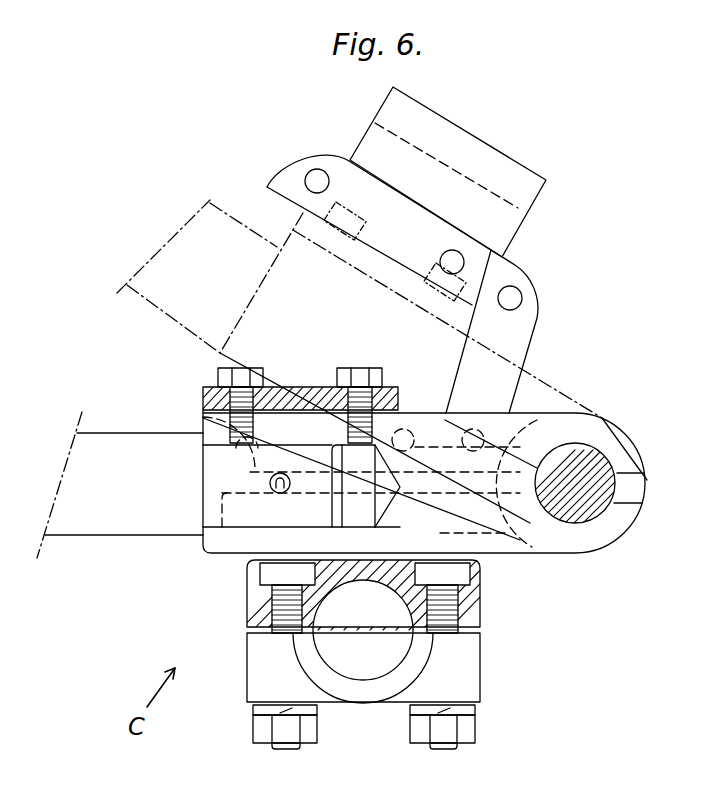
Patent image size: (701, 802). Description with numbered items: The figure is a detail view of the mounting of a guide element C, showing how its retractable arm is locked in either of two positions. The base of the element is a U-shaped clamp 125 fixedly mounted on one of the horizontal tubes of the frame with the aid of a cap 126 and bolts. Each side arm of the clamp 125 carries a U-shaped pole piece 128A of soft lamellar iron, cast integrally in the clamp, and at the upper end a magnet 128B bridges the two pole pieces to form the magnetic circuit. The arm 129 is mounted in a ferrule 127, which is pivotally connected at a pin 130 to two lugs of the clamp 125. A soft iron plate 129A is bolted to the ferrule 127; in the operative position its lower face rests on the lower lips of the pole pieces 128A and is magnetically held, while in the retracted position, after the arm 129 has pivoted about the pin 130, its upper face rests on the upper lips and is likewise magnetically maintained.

The clamp 125 is at (257, 585).
The cap 126 is at (262, 653).
The ferrule 127 is at (202, 547).
The pole piece 128A is at (512, 347).
The magnet 128B is at (488, 158).
The arm 129 is at (135, 521).
The soft iron plate 129A is at (202, 393).
The pin 130 is at (585, 513).